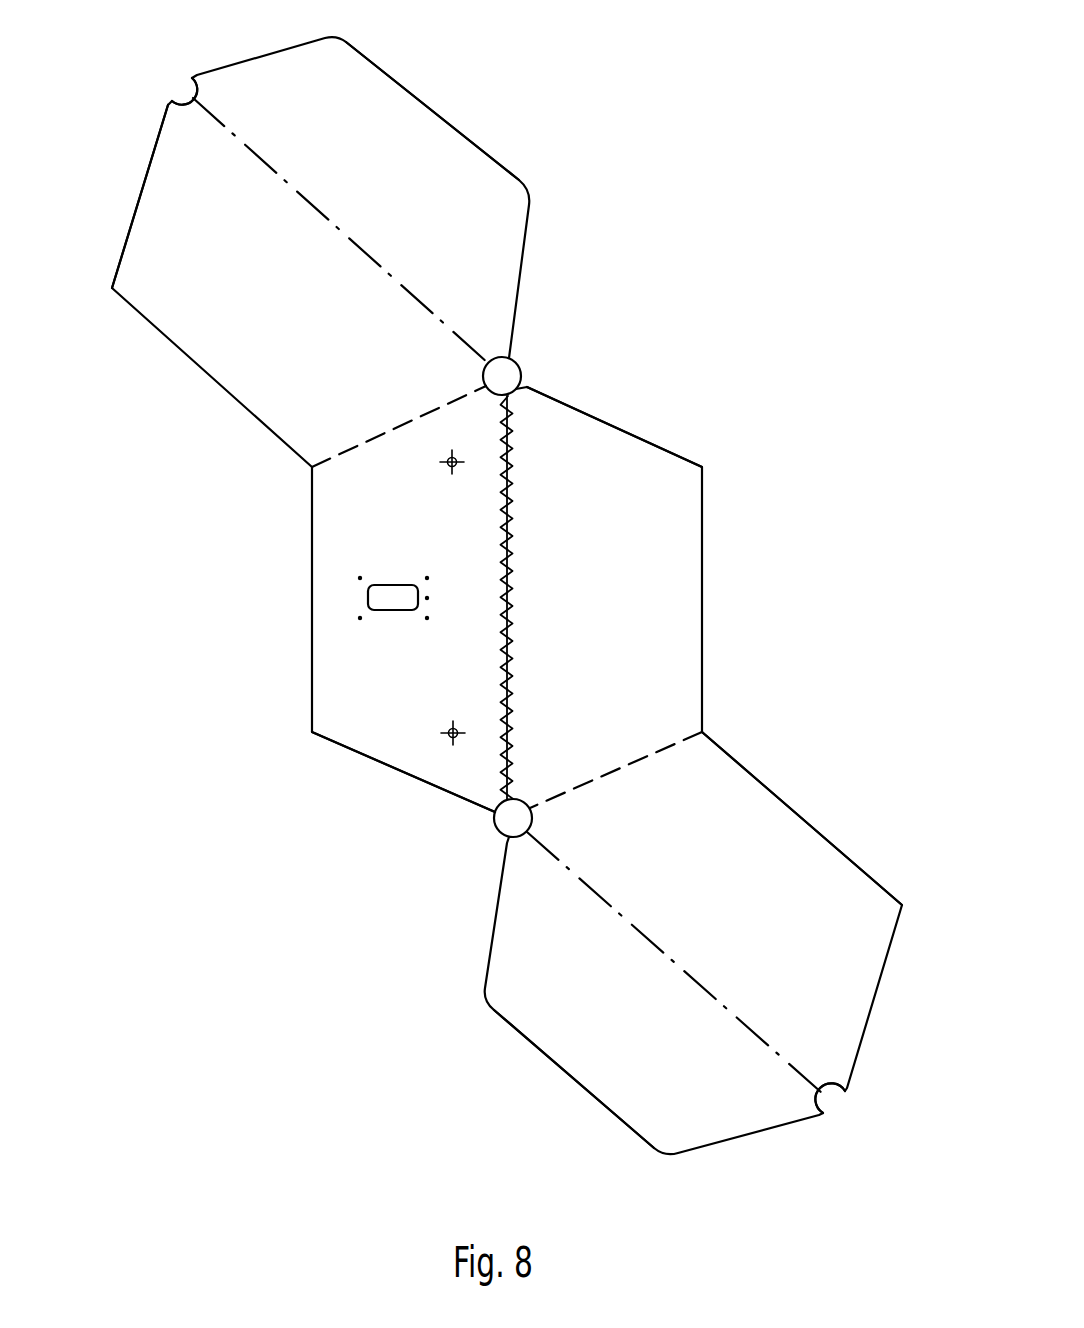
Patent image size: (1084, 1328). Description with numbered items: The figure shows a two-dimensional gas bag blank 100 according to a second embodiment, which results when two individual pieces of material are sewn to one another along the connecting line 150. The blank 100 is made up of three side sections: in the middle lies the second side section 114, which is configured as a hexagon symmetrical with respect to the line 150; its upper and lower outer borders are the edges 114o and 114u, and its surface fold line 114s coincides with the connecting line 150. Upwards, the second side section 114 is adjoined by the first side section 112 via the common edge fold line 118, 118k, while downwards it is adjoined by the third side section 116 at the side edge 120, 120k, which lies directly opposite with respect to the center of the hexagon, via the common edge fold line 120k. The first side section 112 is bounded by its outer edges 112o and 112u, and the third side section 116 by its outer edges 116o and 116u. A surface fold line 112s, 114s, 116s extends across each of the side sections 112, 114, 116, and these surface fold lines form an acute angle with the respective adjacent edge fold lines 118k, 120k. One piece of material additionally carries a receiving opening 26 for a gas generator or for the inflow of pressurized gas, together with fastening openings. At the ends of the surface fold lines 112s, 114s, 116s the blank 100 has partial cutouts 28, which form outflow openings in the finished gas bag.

The gas bag blank 100 is at (640, 98).
The first side section 112 is at (291, 252).
The upper edge of first panel 112o is at (400, 103).
The lower edge of first panel 112u is at (157, 223).
The surface fold line 112s is at (367, 250).
The fold line between first and second panel 118 is at (376, 409).
The edge fold line 118k is at (348, 447).
The second side section 114 is at (517, 601).
The upper edge of second panel 114o is at (635, 457).
The lower edge of second panel 114u is at (350, 722).
The surface fold line 114s is at (509, 597).
The connecting line 150 is at (507, 507).
The receiving opening 26 is at (397, 620).
The side edge 120 is at (621, 793).
The edge fold line 120k is at (640, 762).
The third side section 116 is at (693, 943).
The upper edge of third panel 116o is at (793, 837).
The lower edge of third panel 116u is at (617, 1085).
The surface fold line 116s is at (653, 948).
The partial cutout 28 is at (178, 87).